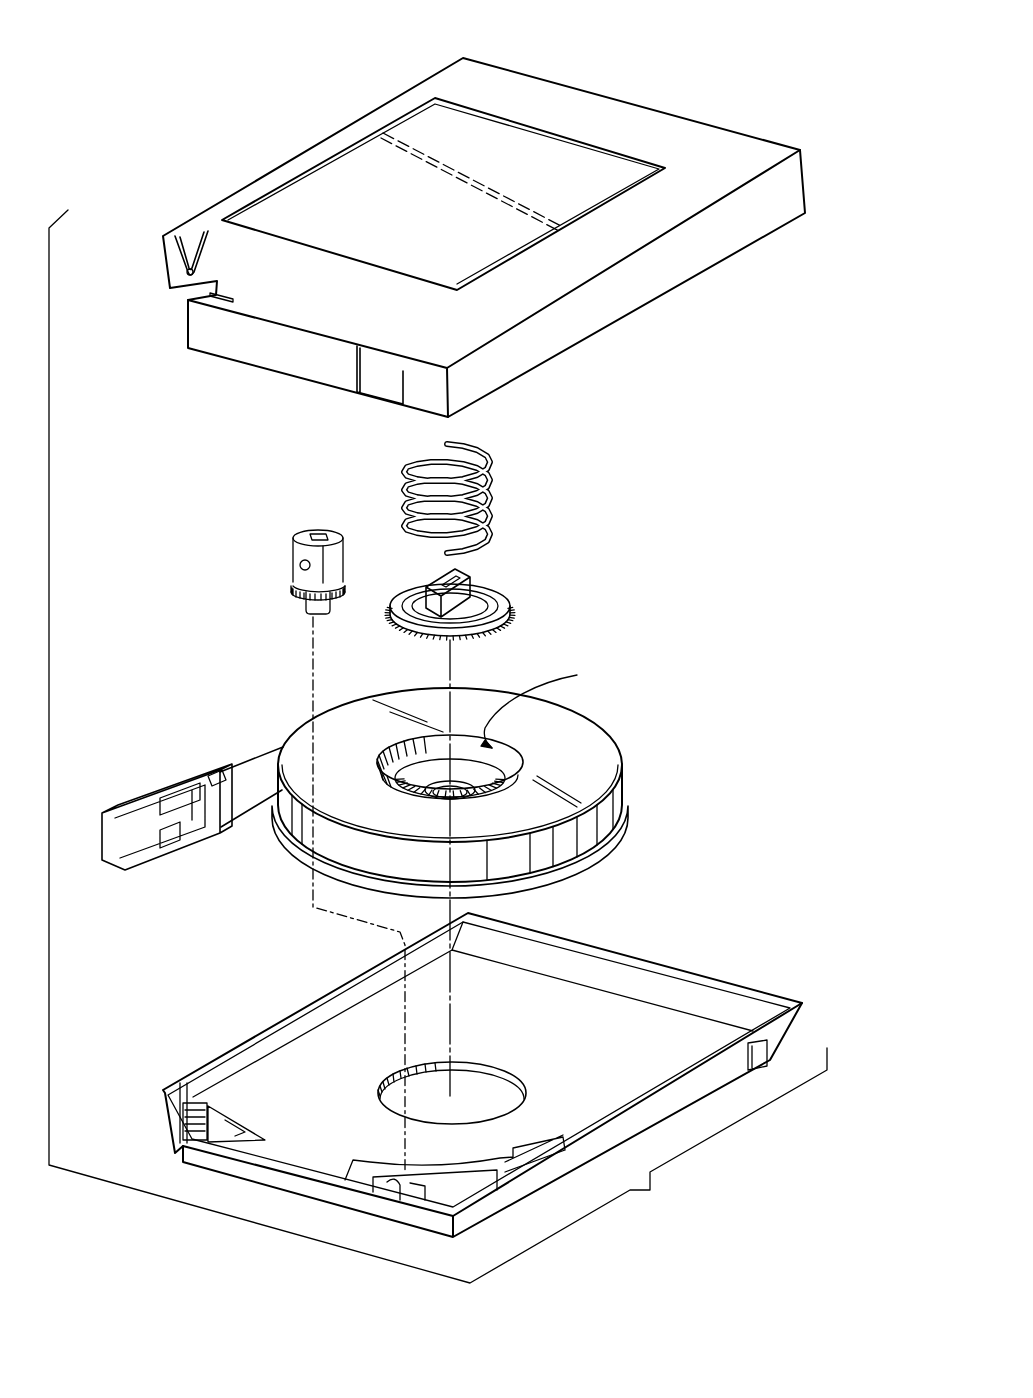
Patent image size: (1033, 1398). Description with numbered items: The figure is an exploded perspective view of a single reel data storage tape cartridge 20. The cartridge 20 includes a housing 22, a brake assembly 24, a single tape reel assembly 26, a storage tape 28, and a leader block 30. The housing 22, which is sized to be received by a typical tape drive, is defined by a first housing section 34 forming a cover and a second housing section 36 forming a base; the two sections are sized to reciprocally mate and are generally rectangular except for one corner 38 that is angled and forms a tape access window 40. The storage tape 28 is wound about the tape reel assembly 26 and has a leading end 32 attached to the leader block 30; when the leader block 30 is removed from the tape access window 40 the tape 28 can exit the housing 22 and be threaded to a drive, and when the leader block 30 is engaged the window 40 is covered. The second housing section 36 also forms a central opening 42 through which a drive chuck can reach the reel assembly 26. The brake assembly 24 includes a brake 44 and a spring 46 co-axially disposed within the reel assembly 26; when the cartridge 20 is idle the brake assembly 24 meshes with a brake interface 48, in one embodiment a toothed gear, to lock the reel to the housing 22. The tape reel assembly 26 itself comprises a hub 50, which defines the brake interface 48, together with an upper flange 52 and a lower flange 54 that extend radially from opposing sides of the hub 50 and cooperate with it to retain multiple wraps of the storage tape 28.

The single reel data storage tape cartridge 20 is at (765, 80).
The housing 22 is at (765, 123).
The brake assembly 24 is at (593, 440).
The single tape reel assembly 26 is at (722, 697).
The storage tape 28 is at (250, 775).
The leader block 30 is at (130, 785).
The leading end 32 is at (235, 792).
The first housing section 34 is at (585, 90).
The second housing section 36 is at (720, 980).
The corner 38 is at (163, 268).
The tape access window 40 is at (160, 1125).
The central opening 42 is at (497, 1070).
The brake 44 is at (510, 613).
The spring 46 is at (490, 497).
The brake interface 48 is at (440, 732).
The hub 50 is at (545, 703).
The upper flange 52 is at (605, 755).
The lower flange 54 is at (620, 817).